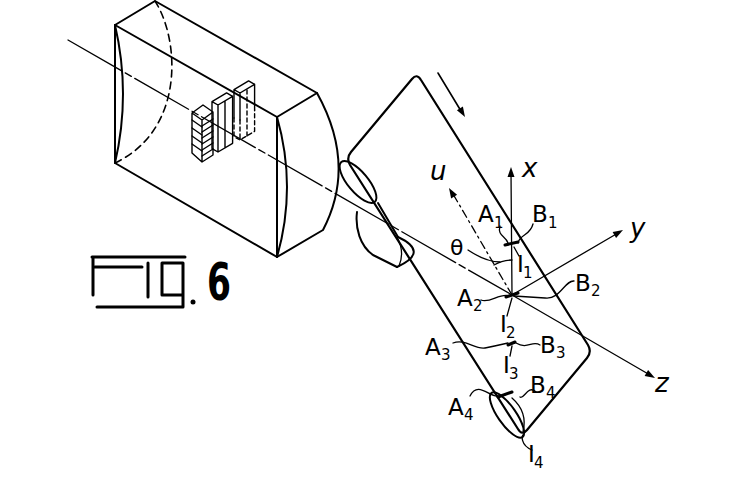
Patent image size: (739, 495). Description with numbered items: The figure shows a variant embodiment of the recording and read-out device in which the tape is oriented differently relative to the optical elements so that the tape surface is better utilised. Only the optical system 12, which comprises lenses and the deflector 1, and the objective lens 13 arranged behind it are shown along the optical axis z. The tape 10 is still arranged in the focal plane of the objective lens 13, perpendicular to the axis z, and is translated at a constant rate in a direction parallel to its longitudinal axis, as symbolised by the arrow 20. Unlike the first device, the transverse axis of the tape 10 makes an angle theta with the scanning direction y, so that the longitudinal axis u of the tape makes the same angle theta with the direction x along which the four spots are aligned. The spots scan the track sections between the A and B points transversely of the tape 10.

The deflector 1 is at (237, 83).
The tape 10 is at (385, 120).
The optical system 12 is at (277, 83).
The objective lens 13 is at (373, 255).
The arrow 20 is at (453, 93).